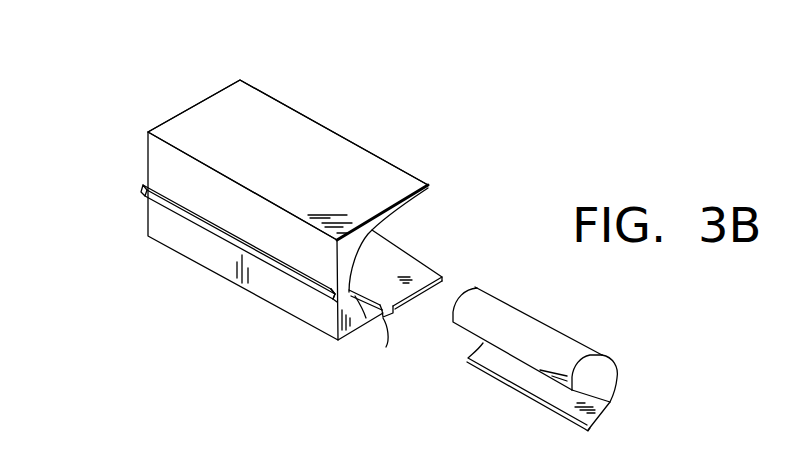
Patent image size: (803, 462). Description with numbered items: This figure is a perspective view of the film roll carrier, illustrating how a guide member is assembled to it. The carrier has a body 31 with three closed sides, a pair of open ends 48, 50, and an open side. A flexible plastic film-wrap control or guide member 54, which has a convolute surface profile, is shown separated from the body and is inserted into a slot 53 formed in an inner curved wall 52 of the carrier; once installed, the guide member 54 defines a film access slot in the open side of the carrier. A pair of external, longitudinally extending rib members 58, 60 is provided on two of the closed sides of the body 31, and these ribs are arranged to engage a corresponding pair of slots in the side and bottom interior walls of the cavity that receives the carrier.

The open end 50 is at (160, 103).
The body 31 is at (330, 142).
The open end 48 is at (422, 208).
The slot 53 is at (378, 305).
The film-wrap control or guide member 54 is at (617, 383).
The rib member 58 is at (146, 187).
The inner curved wall 52 is at (334, 301).
The rib member 60 is at (385, 318).